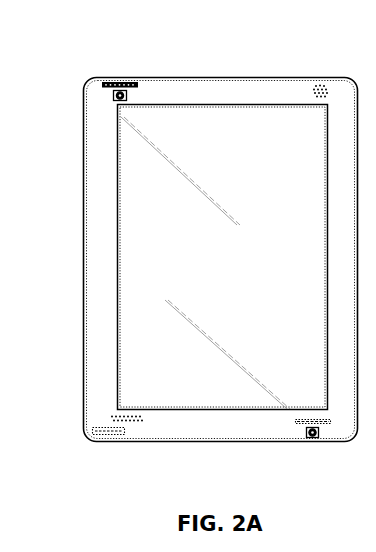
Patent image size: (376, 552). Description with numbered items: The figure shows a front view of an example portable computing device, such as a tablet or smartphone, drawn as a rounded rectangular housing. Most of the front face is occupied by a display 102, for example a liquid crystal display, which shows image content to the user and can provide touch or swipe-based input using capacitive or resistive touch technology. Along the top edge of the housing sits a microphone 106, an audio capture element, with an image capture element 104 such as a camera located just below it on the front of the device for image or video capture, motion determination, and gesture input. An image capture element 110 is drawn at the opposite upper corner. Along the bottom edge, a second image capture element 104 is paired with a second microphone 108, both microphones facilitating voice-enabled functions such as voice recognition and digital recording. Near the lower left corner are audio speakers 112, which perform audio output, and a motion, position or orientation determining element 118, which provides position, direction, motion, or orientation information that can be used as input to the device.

The display 102 is at (117, 194).
The image capture element 104 is at (113, 95).
The microphone 106 is at (125, 82).
The microphone 108 is at (325, 424).
The image capture element 110 is at (318, 85).
The audio speakers 112 is at (127, 423).
The motion, position or orientation determining element 118 is at (107, 436).